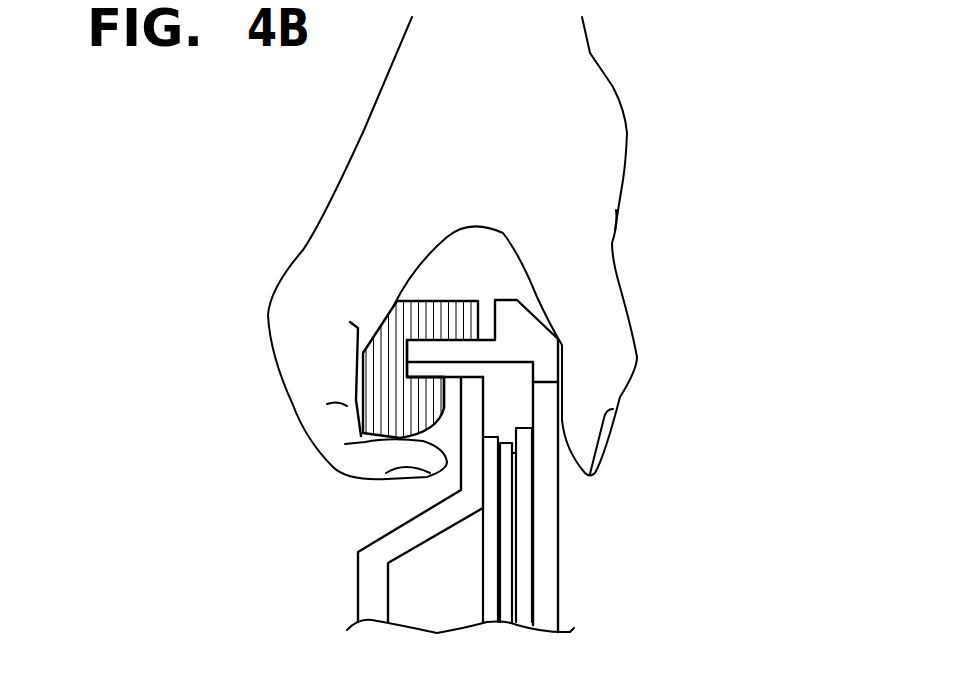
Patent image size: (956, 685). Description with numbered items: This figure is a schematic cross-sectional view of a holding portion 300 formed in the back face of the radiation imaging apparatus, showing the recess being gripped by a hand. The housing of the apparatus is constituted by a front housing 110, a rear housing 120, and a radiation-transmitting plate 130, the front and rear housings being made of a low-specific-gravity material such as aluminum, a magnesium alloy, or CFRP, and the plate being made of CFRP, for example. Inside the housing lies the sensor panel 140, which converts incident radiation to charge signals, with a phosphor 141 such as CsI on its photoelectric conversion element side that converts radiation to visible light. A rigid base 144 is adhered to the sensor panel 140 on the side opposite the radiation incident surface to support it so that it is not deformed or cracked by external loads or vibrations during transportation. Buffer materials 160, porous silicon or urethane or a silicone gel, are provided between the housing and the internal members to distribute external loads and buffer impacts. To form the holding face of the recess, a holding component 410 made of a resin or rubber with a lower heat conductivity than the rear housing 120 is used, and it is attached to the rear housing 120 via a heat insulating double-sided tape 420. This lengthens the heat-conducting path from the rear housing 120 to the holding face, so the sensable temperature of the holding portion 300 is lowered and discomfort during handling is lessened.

The front housing 110 is at (538, 352).
The rear housing 120 is at (373, 595).
The radiation-transmitting plate 130 is at (550, 608).
The sensor panel 140 is at (505, 520).
The phosphor 141 is at (517, 547).
The base 144 is at (492, 468).
The buffer materials 160 is at (527, 582).
The holding portion 300 is at (397, 492).
The holding component 410 is at (383, 388).
The heat insulating double-sided tape 420 is at (452, 382).